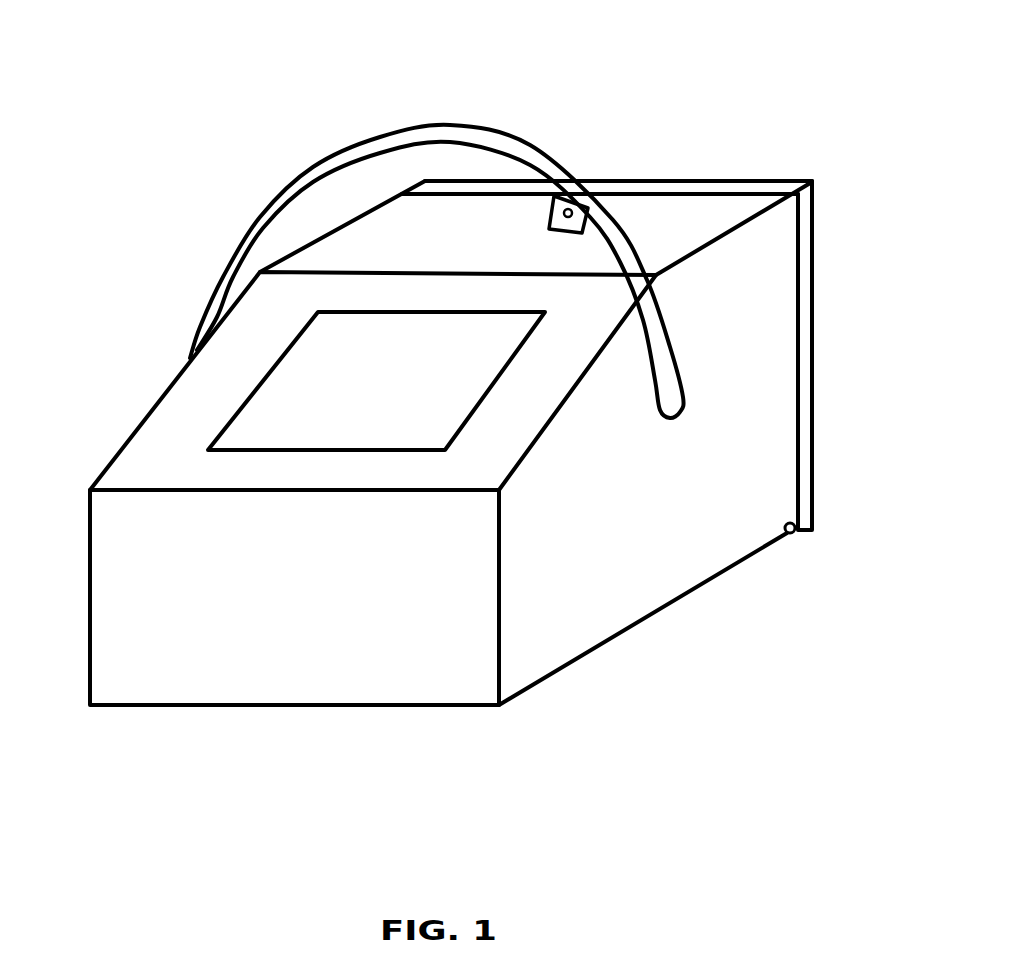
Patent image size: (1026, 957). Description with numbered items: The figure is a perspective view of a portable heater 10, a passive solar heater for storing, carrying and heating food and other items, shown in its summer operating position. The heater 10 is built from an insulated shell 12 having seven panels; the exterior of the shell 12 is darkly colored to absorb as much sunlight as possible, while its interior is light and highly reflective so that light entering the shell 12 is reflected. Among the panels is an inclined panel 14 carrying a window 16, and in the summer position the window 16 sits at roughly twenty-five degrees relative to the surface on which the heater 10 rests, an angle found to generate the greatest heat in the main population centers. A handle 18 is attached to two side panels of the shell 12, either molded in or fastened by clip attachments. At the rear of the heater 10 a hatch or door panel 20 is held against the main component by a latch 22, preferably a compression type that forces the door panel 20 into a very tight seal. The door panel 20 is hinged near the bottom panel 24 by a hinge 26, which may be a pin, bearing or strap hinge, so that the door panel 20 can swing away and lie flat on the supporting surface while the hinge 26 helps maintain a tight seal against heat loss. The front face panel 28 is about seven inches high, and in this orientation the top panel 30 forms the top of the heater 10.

The portable heater 10 is at (581, 27).
The insulated shell 12 is at (805, 330).
The inclined panel 14 is at (220, 358).
The window 16 is at (243, 417).
The handle 18 is at (307, 165).
The door panel 20 is at (813, 212).
The latch 22 is at (583, 221).
The bottom panel 24 is at (812, 502).
The hinge 26 is at (793, 535).
The front face panel 28 is at (455, 663).
The top panel 30 is at (718, 223).